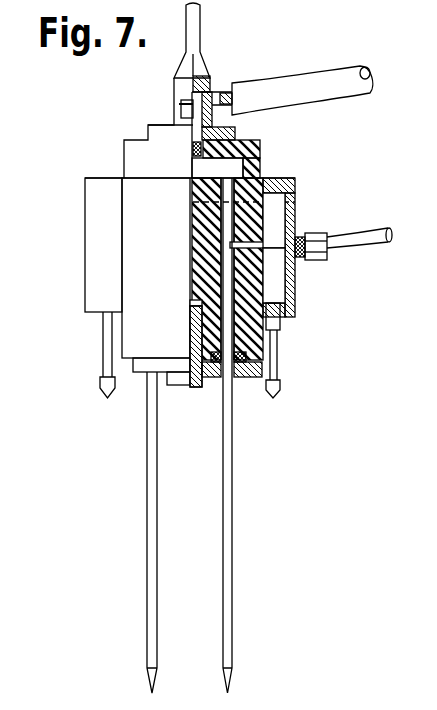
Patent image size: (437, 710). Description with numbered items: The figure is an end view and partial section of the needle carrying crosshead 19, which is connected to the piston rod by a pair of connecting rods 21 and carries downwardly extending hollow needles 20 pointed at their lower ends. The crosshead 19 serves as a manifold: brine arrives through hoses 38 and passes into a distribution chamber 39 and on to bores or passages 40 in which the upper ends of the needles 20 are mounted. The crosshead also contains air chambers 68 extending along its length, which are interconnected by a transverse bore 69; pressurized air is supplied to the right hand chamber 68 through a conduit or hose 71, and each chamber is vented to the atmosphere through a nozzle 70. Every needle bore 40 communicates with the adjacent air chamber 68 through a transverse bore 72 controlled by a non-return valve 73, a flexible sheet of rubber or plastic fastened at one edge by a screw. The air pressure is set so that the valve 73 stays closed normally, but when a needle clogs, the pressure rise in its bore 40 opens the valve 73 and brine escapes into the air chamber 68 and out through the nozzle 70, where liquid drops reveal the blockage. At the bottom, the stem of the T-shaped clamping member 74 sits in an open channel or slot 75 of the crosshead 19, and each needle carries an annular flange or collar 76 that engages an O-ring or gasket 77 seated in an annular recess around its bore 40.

The crosshead 19 is at (302, 175).
The hollow needles 20 is at (147, 578).
The connecting rods 21 is at (202, 22).
The hoses 38 is at (284, 80).
The distribution chamber 39 is at (232, 165).
The needle bores 40 is at (275, 295).
The air chambers 68 is at (85, 262).
The transverse bore 69 is at (293, 207).
The nozzle 70 is at (103, 366).
The conduit 71 is at (378, 230).
The transverse bore 72 is at (252, 238).
The non-return valve 73 is at (270, 258).
The T-shaped clamping member 74 is at (198, 388).
The open channel 75 is at (192, 302).
The annular flange 76 is at (253, 374).
The O-ring 77 is at (247, 352).